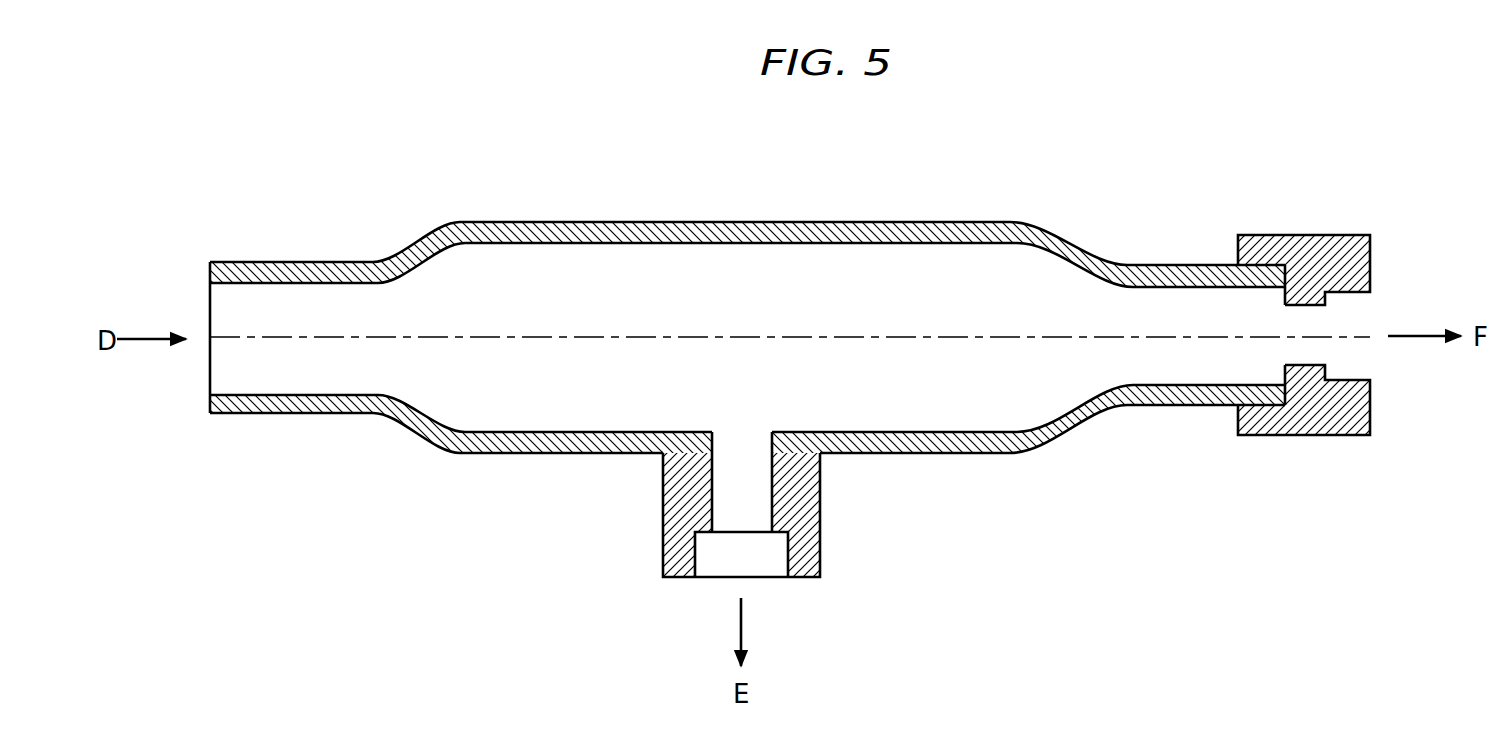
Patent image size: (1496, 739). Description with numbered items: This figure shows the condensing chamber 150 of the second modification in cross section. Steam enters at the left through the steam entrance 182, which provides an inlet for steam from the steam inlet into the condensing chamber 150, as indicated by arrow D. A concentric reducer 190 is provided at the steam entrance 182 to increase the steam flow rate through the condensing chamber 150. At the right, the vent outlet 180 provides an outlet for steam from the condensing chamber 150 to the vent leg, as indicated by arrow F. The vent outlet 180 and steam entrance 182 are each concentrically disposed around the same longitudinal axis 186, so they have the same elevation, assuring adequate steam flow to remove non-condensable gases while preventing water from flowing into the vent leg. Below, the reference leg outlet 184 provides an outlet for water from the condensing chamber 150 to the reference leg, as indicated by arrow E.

The condensing chamber 150 is at (789, 383).
The vent outlet 180 is at (1361, 307).
The steam entrance 182 is at (220, 312).
The reference leg outlet 184 is at (761, 567).
The longitudinal axis 186 is at (913, 337).
The concentric reducer 190 is at (258, 405).